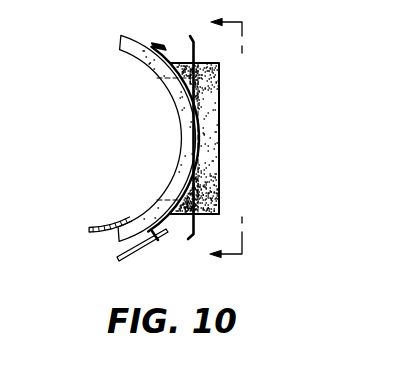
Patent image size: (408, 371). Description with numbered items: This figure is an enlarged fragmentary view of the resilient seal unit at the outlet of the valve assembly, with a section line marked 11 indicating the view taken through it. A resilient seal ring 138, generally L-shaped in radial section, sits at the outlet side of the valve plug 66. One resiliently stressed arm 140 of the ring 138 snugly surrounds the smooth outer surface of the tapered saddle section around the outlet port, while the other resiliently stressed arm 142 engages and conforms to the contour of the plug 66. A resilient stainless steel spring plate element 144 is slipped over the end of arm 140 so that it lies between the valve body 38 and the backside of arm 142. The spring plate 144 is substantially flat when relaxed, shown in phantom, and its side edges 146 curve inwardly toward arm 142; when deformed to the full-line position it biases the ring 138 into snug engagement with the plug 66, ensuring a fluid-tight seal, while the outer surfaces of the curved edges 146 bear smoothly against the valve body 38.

The ring arm 142 is at (132, 50).
The side edges 146 is at (152, 43).
The resilient seal ring 138 is at (222, 108).
The ring arm 140 is at (217, 189).
The spring plate element 144 is at (193, 228).
The valve plug 66 is at (117, 224).
The valve body 38 is at (140, 256).
The section line 11- 11 is at (235, 136).